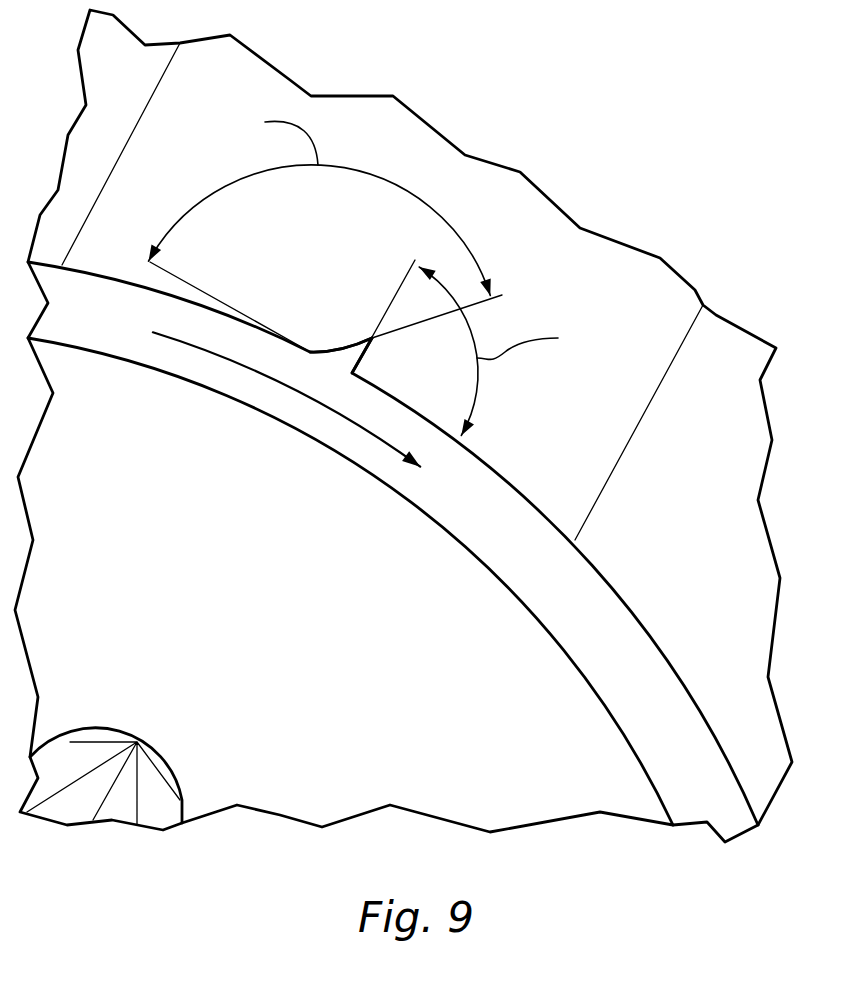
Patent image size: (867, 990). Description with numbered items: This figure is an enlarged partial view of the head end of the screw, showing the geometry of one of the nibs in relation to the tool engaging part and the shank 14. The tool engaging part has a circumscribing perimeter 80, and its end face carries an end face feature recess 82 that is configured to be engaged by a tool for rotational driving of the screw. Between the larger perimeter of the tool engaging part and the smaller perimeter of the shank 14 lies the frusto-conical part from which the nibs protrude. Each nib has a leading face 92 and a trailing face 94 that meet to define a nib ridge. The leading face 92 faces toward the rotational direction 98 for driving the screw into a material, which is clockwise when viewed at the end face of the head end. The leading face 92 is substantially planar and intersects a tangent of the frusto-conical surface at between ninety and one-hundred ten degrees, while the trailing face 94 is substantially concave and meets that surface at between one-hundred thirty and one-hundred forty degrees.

The shank 14 is at (580, 240).
The circumscribing perimeter 80 is at (605, 627).
The end face feature recess 82 is at (132, 782).
The leading face 92 is at (358, 360).
The trailing face 94 is at (340, 350).
The rotational direction 98 is at (322, 405).